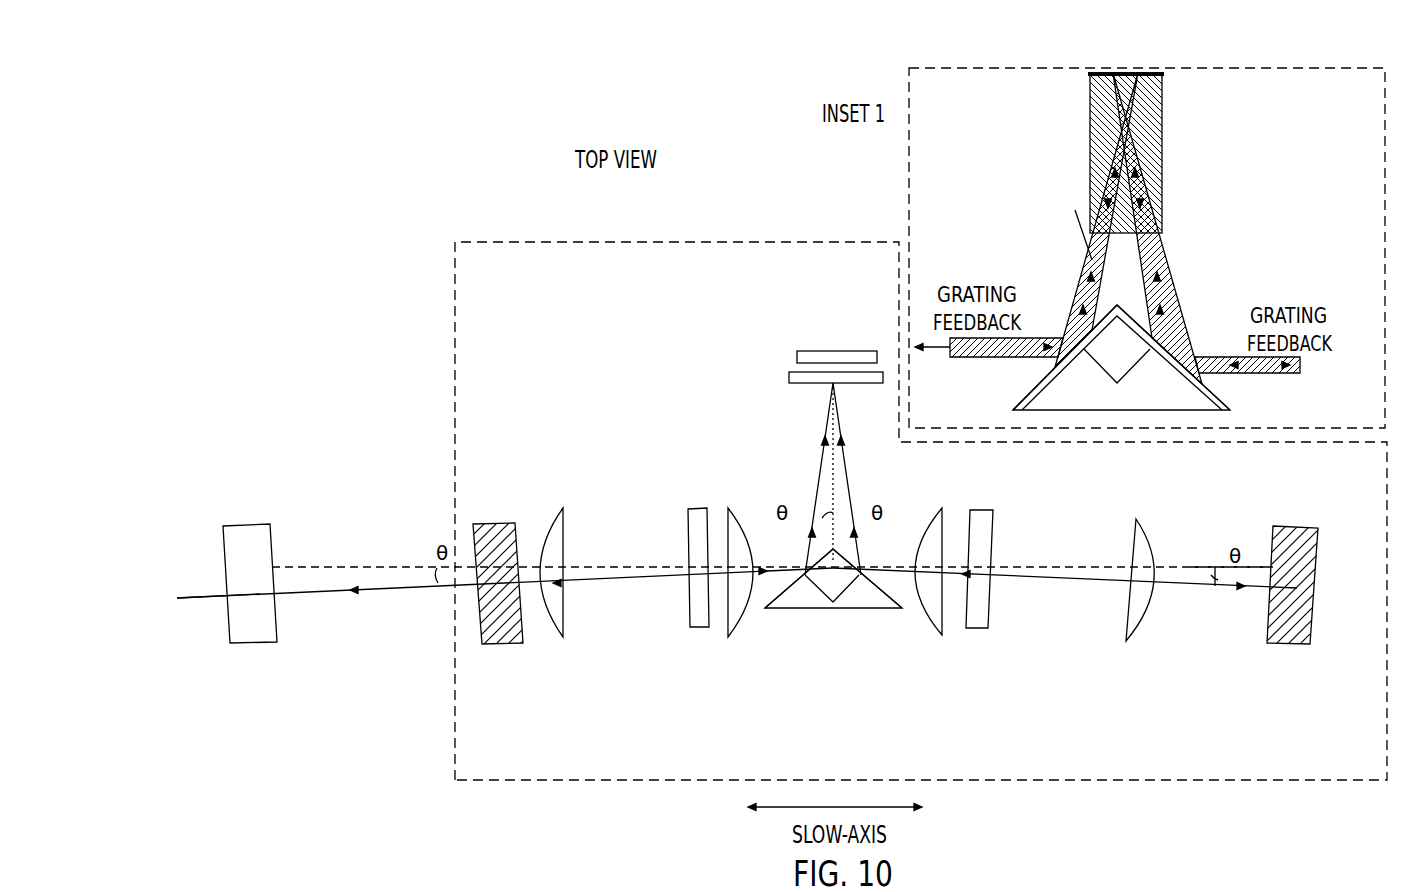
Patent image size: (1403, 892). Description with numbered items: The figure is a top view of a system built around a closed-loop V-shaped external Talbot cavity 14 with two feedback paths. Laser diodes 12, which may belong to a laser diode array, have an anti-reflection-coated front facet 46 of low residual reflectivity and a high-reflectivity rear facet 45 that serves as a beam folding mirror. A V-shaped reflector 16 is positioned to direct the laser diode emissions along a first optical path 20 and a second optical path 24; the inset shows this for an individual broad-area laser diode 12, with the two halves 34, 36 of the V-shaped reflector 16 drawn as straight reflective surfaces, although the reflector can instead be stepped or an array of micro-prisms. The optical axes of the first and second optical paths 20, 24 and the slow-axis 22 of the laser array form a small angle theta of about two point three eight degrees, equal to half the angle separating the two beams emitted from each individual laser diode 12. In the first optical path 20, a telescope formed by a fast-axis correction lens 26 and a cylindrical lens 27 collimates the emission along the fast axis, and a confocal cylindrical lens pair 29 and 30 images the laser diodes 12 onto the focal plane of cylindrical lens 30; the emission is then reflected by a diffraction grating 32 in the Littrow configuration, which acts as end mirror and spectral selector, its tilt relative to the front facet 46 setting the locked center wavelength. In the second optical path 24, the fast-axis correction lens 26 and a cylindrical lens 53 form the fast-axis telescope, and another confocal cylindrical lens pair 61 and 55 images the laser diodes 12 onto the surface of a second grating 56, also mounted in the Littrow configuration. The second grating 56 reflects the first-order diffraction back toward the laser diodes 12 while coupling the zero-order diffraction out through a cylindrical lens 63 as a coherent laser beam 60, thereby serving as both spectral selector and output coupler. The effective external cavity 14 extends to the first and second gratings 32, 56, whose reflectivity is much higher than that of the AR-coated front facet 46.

The laser diode 12 is at (797, 352).
The closed-loop V-shaped external Talbot cavity 14 is at (1130, 781).
The V-shaped reflector 16 is at (833, 609).
The first optical path 20 is at (1072, 582).
The slow-axis 22 is at (1190, 567).
The second optical path 24 is at (605, 581).
The fast-axis correction lens 26 is at (789, 376).
The cylindrical lens 27 is at (986, 510).
The cylindrical lens 29 is at (942, 508).
The cylindrical lens 30 is at (1151, 521).
The grating 32 is at (1285, 645).
The half of the V-shaped reflector 34 is at (902, 609).
The half of the V-shaped reflector 36 is at (766, 609).
The rear facet 45 is at (1163, 76).
The front facet 46 is at (1087, 232).
The cylindrical lens 53 is at (697, 509).
The cylindrical lens 55 is at (558, 508).
The second grating 56 is at (502, 645).
The coherent laser beam 60 is at (178, 597).
The cylindrical lens 61 is at (735, 508).
The cylindrical lens 63 is at (238, 643).